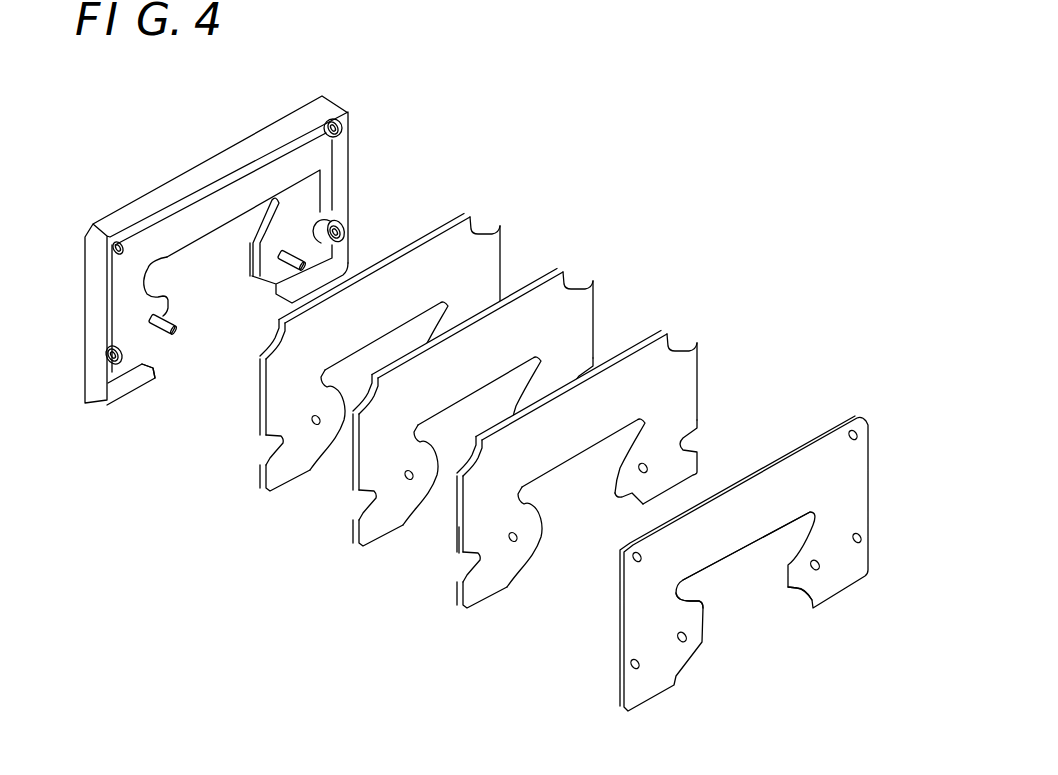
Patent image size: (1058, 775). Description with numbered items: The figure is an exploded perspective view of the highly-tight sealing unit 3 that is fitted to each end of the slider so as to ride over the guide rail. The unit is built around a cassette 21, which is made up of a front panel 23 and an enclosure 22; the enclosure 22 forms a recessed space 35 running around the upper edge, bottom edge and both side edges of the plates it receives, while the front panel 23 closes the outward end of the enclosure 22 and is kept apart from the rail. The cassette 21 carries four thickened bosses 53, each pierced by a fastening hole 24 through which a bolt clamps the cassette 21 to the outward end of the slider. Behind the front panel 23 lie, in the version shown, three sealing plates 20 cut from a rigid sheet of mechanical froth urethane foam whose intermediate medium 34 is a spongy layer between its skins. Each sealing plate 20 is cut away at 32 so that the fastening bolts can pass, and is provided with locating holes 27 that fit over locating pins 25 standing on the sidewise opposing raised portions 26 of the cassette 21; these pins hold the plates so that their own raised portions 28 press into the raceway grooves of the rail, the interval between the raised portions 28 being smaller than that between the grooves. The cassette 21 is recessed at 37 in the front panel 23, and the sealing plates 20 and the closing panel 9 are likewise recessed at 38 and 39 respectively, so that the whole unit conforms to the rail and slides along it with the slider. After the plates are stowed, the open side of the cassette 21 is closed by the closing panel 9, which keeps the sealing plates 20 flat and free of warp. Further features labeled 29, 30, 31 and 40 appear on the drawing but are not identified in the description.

The highly-tight sealing unit 3 is at (527, 205).
The closing panel 9 is at (807, 480).
The sealing plate 20 is at (452, 258).
The cassette 21 is at (224, 158).
The enclosure 22 is at (163, 196).
The front panel 23 is at (290, 162).
The fastening holes 24 is at (343, 122).
The locating pins 25 is at (301, 258).
The raised portions of cassette 26 is at (258, 238).
The locating holes 27 is at (408, 480).
The raised portions of sealing plate 28 is at (332, 450).
The corner hole 29 is at (851, 428).
The notch 30 is at (797, 592).
The hole 31 is at (819, 570).
The cut-away 32 is at (278, 336).
The intermediate medium 34 is at (458, 527).
The recessed space 35 is at (128, 316).
The recess in front panel 37 is at (203, 242).
The recess in sealing plate 38 is at (384, 343).
The recess in closing panel 39 is at (742, 552).
The bottom bar 40 is at (136, 398).
The thickened bosses 53 is at (122, 242).